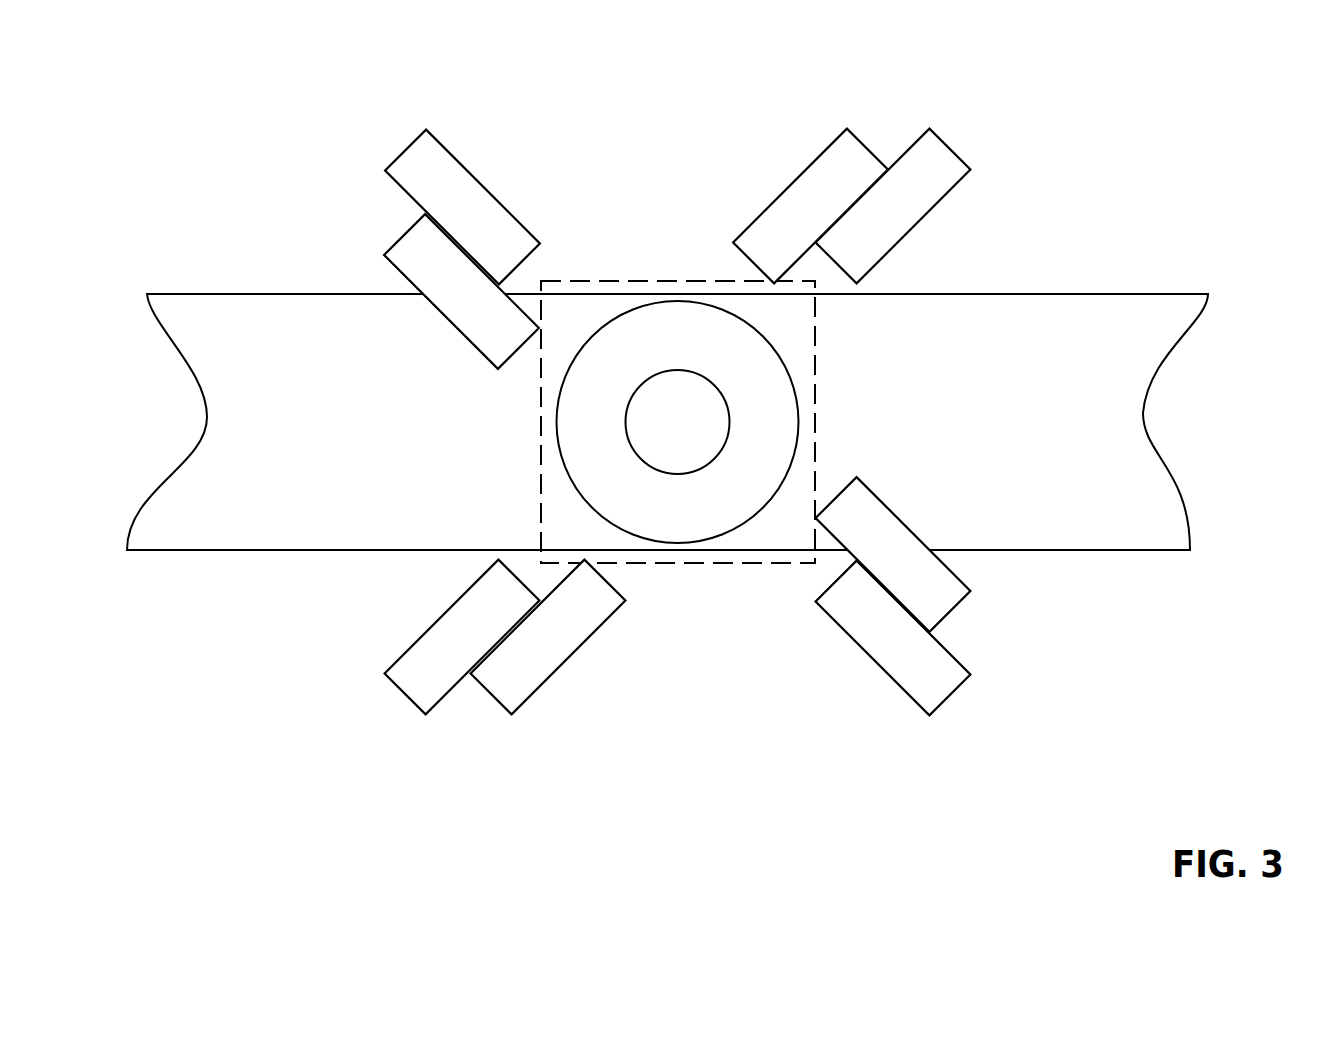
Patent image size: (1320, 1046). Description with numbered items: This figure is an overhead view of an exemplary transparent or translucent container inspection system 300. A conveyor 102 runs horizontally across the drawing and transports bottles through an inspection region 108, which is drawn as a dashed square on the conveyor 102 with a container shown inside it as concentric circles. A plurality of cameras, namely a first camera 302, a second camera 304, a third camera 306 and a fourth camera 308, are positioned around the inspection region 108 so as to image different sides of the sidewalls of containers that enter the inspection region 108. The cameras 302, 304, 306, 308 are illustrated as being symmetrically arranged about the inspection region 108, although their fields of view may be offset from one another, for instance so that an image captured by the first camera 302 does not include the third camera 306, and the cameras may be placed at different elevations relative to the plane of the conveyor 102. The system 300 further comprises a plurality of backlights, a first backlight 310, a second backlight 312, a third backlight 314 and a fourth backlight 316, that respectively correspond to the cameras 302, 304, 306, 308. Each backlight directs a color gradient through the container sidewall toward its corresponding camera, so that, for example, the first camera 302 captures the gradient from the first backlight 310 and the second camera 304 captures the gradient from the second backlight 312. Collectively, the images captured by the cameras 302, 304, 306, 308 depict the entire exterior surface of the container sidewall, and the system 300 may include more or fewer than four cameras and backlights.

The container inspection system 300 is at (1130, 113).
The conveyor 102 is at (1119, 524).
The inspection region 108 is at (697, 279).
The first camera 302 is at (435, 623).
The second camera 304 is at (403, 152).
The third camera 306 is at (922, 218).
The fourth camera 308 is at (951, 694).
The first backlight 310 is at (812, 164).
The second backlight 312 is at (956, 606).
The third backlight 314 is at (569, 659).
The fourth backlight 316 is at (402, 238).